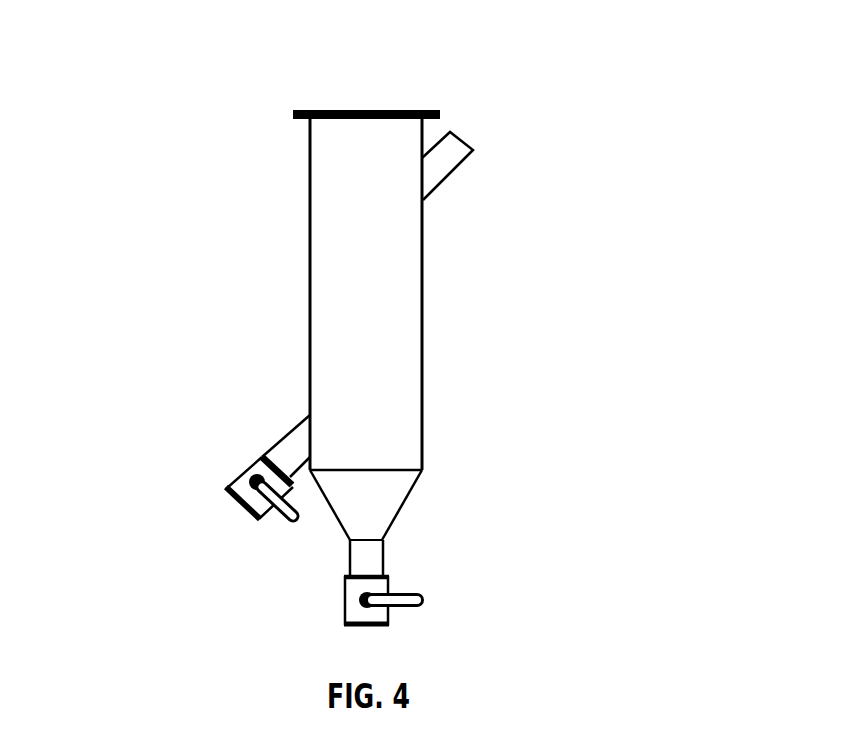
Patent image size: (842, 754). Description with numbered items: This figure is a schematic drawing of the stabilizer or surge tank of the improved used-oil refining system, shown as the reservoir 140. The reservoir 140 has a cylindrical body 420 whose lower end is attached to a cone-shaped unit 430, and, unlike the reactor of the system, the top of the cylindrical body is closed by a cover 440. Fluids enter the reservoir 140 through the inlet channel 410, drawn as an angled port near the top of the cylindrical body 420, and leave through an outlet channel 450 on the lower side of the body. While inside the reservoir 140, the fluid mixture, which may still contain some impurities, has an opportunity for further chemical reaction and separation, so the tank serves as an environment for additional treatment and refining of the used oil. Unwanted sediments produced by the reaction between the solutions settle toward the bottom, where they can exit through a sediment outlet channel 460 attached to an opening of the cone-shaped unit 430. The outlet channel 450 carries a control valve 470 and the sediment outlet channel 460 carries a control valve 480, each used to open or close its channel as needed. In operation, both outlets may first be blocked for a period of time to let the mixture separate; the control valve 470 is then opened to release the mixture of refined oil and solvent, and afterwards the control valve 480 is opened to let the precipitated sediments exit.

The reservoir 140 is at (100, 46).
The inlet channel 410 is at (460, 140).
The cylindrical body 420 is at (423, 280).
The cone-shaped unit 430 is at (408, 498).
The cover 440 is at (358, 112).
The outlet channel 450 is at (285, 435).
The sediment outlet channel 460 is at (381, 552).
The control valve 470 is at (283, 518).
The control valve 480 is at (416, 592).